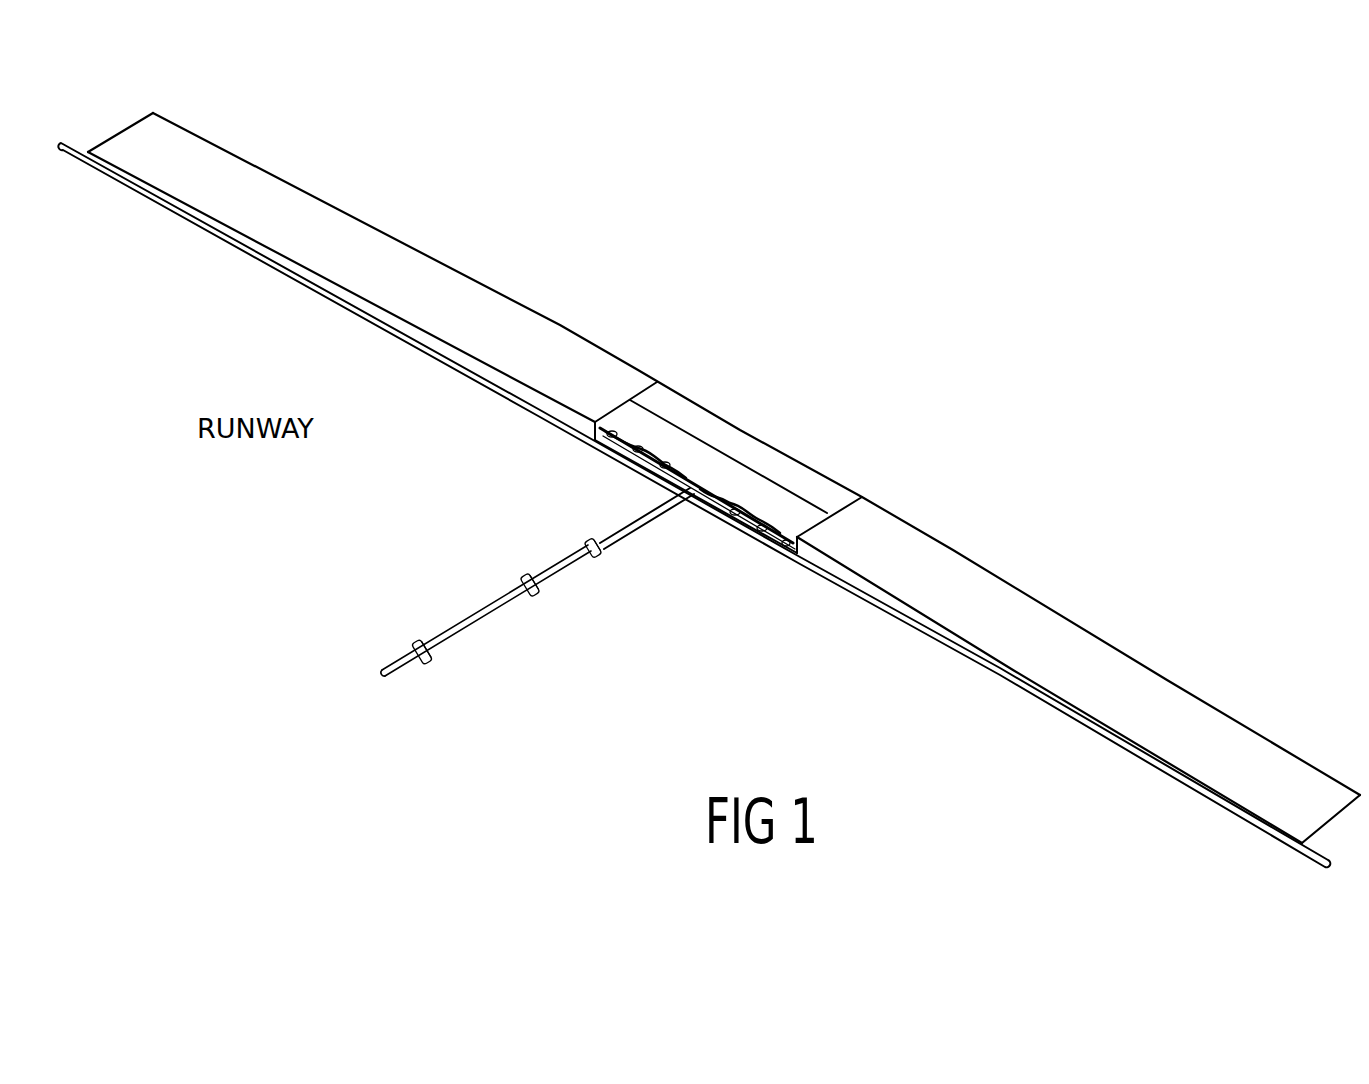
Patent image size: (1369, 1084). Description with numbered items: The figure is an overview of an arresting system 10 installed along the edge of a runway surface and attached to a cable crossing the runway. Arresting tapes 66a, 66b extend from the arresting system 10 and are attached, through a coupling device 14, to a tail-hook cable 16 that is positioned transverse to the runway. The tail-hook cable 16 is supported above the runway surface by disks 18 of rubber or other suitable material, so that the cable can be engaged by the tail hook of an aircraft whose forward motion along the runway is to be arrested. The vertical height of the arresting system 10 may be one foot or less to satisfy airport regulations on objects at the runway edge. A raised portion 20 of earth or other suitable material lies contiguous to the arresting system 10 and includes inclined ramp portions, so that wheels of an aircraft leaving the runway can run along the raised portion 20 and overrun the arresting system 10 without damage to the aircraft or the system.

The arresting system 10 is at (777, 420).
The raised portion of earth 20 is at (953, 550).
The coupling device 14 is at (582, 545).
The tail-hook cable 16 is at (463, 627).
The disks 18 is at (410, 642).
The arresting tape 66a is at (660, 497).
The arresting tape 66b is at (650, 523).